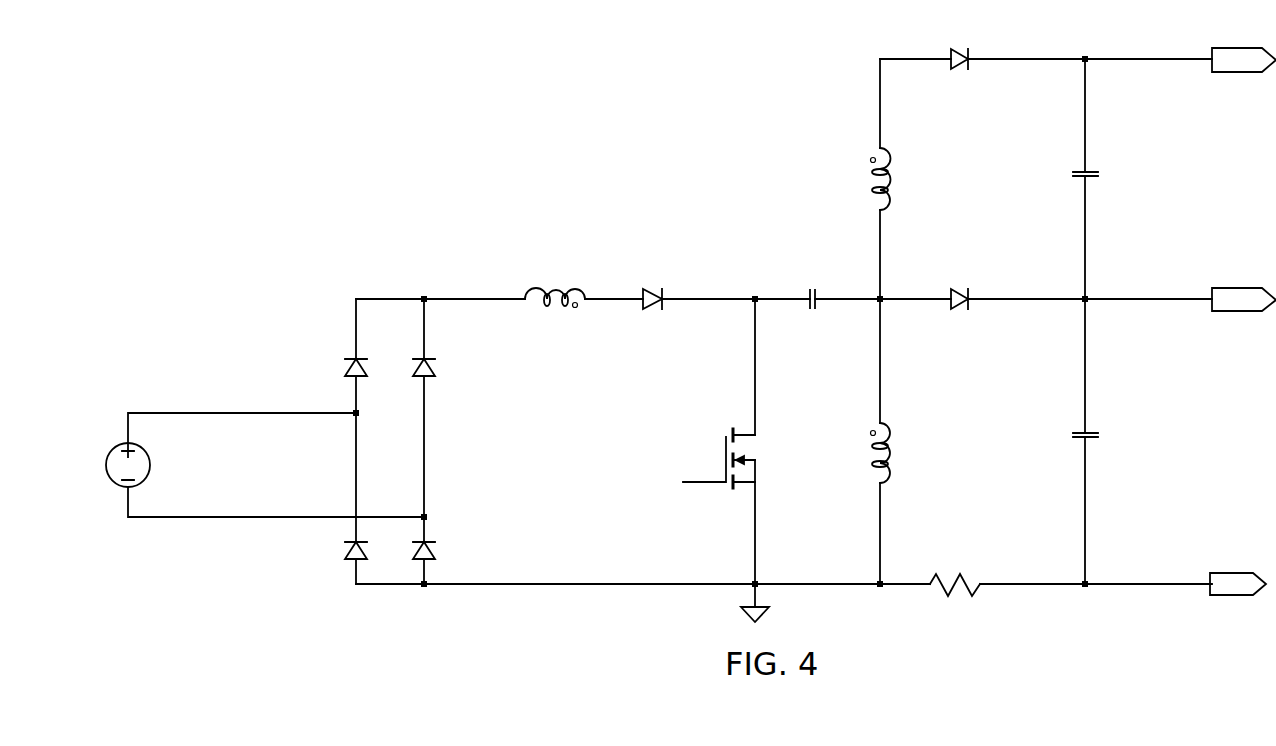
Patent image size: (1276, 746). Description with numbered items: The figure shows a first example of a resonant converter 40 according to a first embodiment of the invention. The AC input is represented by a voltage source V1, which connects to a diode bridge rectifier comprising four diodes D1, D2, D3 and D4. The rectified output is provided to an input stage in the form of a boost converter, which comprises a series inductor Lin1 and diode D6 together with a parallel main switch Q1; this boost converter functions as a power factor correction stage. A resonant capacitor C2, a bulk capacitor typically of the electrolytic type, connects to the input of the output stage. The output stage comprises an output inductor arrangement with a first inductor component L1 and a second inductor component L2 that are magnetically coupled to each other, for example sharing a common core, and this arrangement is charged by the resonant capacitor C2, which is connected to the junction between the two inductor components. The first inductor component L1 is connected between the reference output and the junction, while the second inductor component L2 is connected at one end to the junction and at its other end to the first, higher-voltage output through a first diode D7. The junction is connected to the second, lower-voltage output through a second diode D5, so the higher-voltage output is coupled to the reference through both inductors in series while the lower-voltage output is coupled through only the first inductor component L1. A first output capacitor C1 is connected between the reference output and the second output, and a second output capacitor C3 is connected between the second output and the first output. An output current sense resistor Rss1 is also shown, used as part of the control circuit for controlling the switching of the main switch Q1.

The resonant converter 40 is at (691, 326).
The voltage source V1 is at (134, 458).
The diode D1 is at (348, 358).
The diode D2 is at (416, 358).
The diode D3 is at (348, 540).
The diode D4 is at (416, 540).
The series inductor Lin1 is at (555, 290).
The diode D6 is at (651, 290).
The resonant capacitor C2 is at (811, 299).
The main switch Q1 is at (731, 458).
The second inductor component L2 is at (891, 179).
The first inductor component L1 is at (891, 453).
The first diode D7 is at (958, 50).
The second diode D5 is at (958, 290).
The second output capacitor C3 is at (1090, 165).
The first output capacitor C1 is at (1090, 425).
The output current sense resistor Rss1 is at (955, 576).